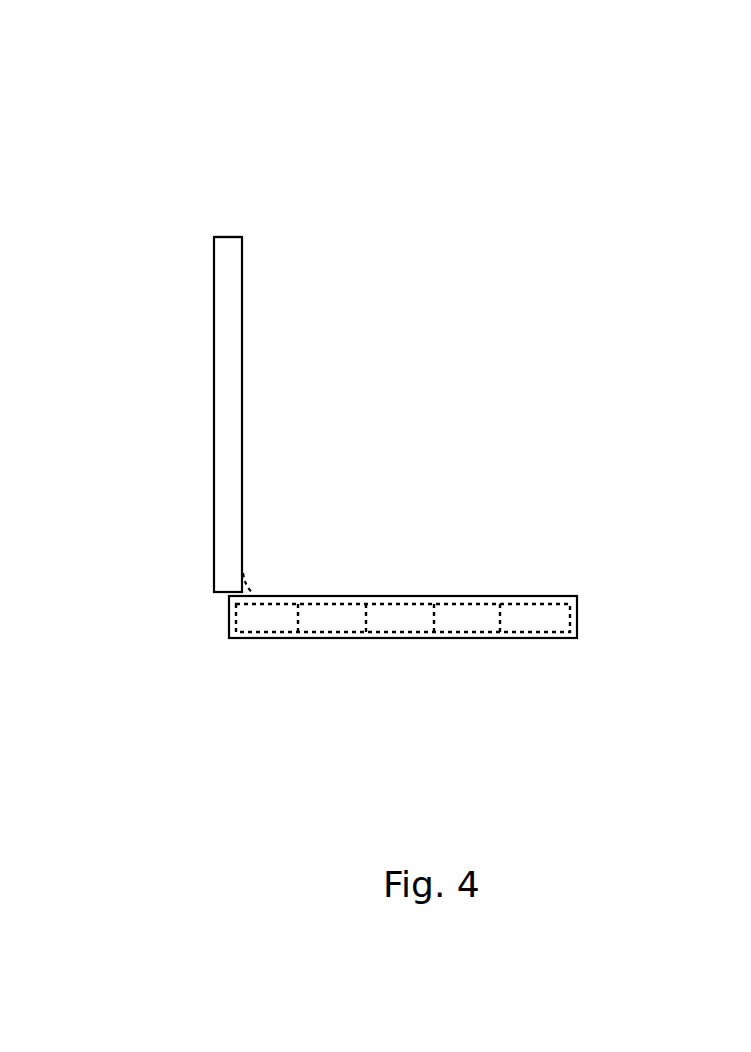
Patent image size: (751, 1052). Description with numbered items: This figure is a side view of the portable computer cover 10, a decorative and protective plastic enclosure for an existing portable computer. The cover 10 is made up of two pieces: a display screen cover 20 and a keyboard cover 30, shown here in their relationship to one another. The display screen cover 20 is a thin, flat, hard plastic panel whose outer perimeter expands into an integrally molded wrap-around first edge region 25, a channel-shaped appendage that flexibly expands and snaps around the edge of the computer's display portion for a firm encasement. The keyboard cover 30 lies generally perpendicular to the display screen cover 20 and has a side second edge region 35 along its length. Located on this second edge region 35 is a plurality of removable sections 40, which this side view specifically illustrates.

The portable computer cover 10 is at (587, 190).
The display screen cover 20 is at (296, 272).
The first edge region 25 is at (226, 255).
The keyboard cover 30 is at (548, 662).
The second edge region 35 is at (570, 621).
The removable sections 40 is at (532, 625).